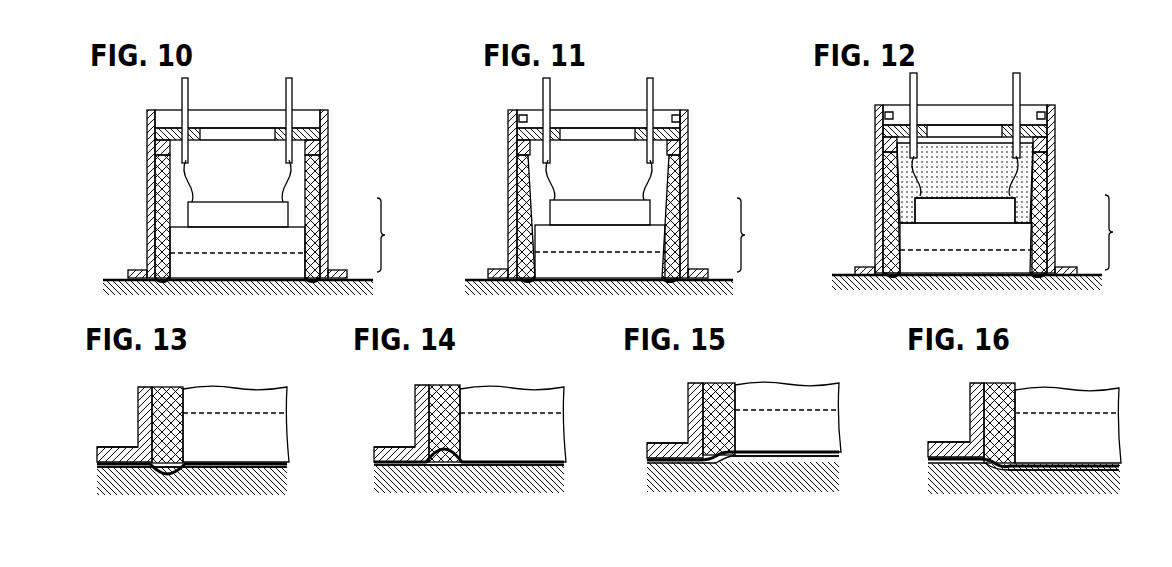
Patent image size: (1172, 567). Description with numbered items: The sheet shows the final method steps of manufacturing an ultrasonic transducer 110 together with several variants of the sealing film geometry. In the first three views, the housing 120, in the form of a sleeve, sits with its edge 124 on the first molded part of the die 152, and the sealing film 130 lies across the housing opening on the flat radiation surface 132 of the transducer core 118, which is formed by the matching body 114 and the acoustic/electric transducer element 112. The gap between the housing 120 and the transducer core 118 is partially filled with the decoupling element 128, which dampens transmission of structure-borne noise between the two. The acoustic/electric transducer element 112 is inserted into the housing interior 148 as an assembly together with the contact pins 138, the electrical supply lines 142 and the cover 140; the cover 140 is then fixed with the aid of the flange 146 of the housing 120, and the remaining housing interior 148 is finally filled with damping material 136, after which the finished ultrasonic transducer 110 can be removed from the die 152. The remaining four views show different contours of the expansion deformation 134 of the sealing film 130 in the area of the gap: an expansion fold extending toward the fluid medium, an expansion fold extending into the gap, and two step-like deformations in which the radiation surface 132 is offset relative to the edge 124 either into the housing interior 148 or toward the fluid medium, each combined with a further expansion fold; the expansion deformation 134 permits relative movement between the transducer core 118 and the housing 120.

In FIG. 12, the ultrasonic transducer 110 is at (868, 102).
In FIG. 10, the acoustic/electric transducer element 112 is at (282, 213).
In FIG. 11, the acoustic/electric transducer element 112 is at (643, 210).
In FIG. 12, the acoustic/electric transducer element 112 is at (1007, 210).
In FIG. 10, the matching body 114 is at (297, 245).
In FIG. 11, the matching body 114 is at (657, 242).
In FIG. 12, the matching body 114 is at (1027, 243).
In FIG. 13, the matching body 114 is at (241, 405).
In FIG. 14, the matching body 114 is at (508, 405).
In FIG. 15, the matching body 114 is at (788, 402).
In FIG. 16, the matching body 114 is at (1060, 402).
In FIG. 10, the transducer core 118 is at (401, 235).
In FIG. 11, the transducer core 118 is at (760, 235).
In FIG. 12, the transducer core 118 is at (1129, 232).
In FIG. 10, the housing 120 is at (147, 171).
In FIG. 11, the housing 120 is at (688, 163).
In FIG. 12, the housing 120 is at (1052, 183).
In FIG. 13, the housing 120 is at (142, 402).
In FIG. 14, the housing 120 is at (419, 402).
In FIG. 15, the housing 120 is at (693, 400).
In FIG. 16, the housing 120 is at (975, 400).
In FIG. 13, the edge 124 is at (115, 452).
In FIG. 14, the edge 124 is at (392, 452).
In FIG. 15, the edge 124 is at (665, 448).
In FIG. 16, the edge 124 is at (945, 447).
In FIG. 10, the decoupling element 128 is at (152, 213).
In FIG. 11, the decoupling element 128 is at (598, 218).
In FIG. 12, the decoupling element 128 is at (965, 214).
In FIG. 13, the decoupling element 128 is at (167, 425).
In FIG. 14, the decoupling element 128 is at (444, 423).
In FIG. 15, the decoupling element 128 is at (719, 419).
In FIG. 16, the decoupling element 128 is at (999, 423).
In FIG. 10, the sealing film 130 is at (178, 278).
In FIG. 11, the sealing film 130 is at (599, 287).
In FIG. 12, the sealing film 130 is at (967, 282).
In FIG. 13, the sealing film 130 is at (116, 467).
In FIG. 14, the sealing film 130 is at (393, 467).
In FIG. 15, the sealing film 130 is at (672, 464).
In FIG. 16, the sealing film 130 is at (944, 463).
In FIG. 13, the radiation surface 132 is at (262, 468).
In FIG. 14, the radiation surface 132 is at (540, 467).
In FIG. 15, the radiation surface 132 is at (812, 460).
In FIG. 16, the radiation surface 132 is at (1092, 470).
In FIG. 13, the expansion deformation 134 is at (165, 482).
In FIG. 14, the expansion deformation 134 is at (440, 478).
In FIG. 15, the expansion deformation 134 is at (718, 474).
In FIG. 16, the expansion deformation 134 is at (988, 482).
In FIG. 12, the damping material 136 is at (1022, 163).
In FIG. 10, the contact pins 138 is at (188, 92).
In FIG. 11, the contact pins 138 is at (550, 90).
In FIG. 12, the contact pins 138 is at (1020, 88).
In FIG. 10, the cover 140 is at (328, 129).
In FIG. 11, the cover 140 is at (688, 129).
In FIG. 12, the cover 140 is at (1055, 118).
In FIG. 10, the electrical supply lines 142 is at (198, 183).
In FIG. 11, the electrical supply lines 142 is at (558, 182).
In FIG. 12, the electrical supply lines 142 is at (918, 185).
In FIG. 11, the flange 146 is at (523, 110).
In FIG. 12, the flange 146 is at (880, 120).
In FIG. 12, the housing interior 148 is at (958, 128).
In FIG. 13, the die 152 is at (228, 478).
In FIG. 14, the die 152 is at (497, 478).
In FIG. 15, the die 152 is at (777, 478).
In FIG. 16, the die 152 is at (1050, 480).